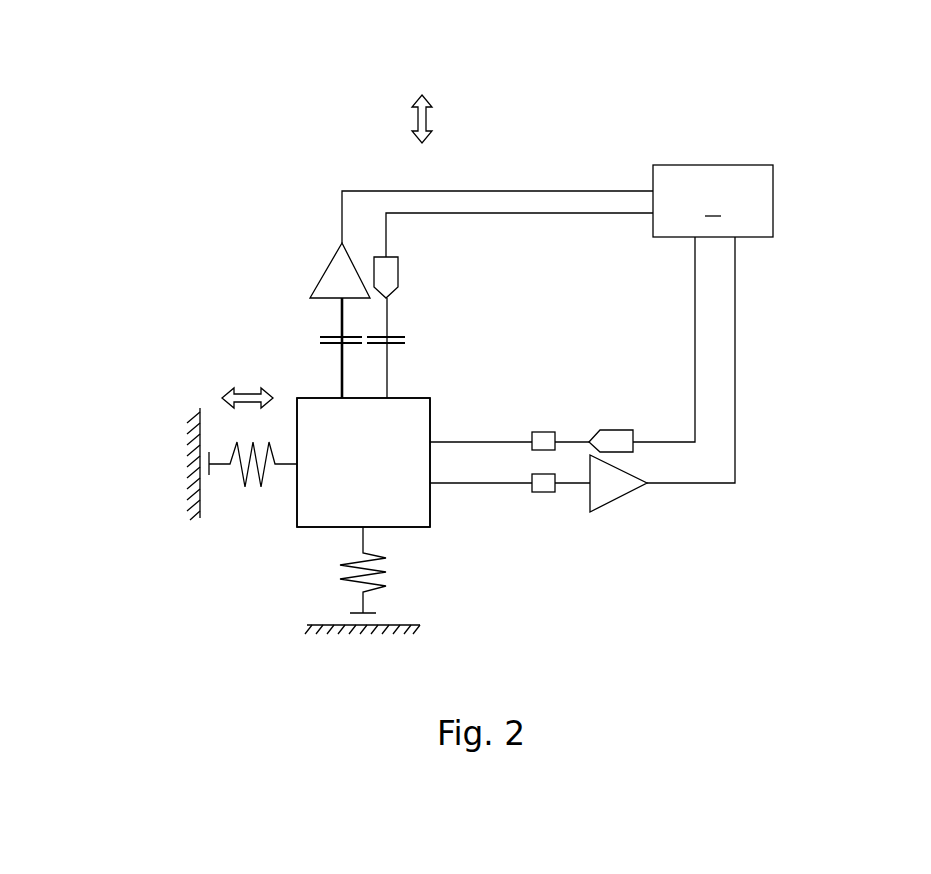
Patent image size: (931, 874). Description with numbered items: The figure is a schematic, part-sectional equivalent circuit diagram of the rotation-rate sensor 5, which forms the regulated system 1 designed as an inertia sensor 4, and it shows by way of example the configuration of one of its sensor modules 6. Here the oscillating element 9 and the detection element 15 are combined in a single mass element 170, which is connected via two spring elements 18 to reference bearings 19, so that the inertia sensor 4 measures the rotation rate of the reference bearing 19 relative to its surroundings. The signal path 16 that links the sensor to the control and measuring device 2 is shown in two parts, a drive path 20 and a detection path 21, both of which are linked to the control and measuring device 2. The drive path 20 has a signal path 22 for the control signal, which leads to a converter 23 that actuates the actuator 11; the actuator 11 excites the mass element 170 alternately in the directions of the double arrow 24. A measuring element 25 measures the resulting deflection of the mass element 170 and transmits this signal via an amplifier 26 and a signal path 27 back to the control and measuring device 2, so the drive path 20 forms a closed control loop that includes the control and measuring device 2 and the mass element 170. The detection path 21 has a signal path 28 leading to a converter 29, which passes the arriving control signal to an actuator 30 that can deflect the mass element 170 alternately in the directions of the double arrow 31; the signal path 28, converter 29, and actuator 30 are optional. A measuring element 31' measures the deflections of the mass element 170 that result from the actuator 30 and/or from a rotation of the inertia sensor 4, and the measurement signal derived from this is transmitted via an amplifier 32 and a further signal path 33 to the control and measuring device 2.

The signal path 16 is at (143, 72).
The detection path 21 is at (345, 135).
The double arrow 31 is at (444, 119).
The signal path 33 is at (497, 190).
The signal path 28 is at (522, 213).
The control and measuring device 2 is at (713, 201).
The amplifier 32 is at (338, 281).
The converter 29 is at (390, 279).
The measuring element 31' is at (318, 348).
The actuator 30 is at (398, 338).
The oscillating element 9 is at (403, 425).
The mass element 170 is at (363, 462).
The detection element 15 is at (363, 462).
The double arrow 24 is at (247, 398).
The reference bearing 19 is at (196, 460).
The spring element 18 is at (261, 484).
The actuator 11 is at (541, 432).
The converter 23 is at (614, 430).
The signal path 22 is at (693, 344).
The measuring element 25 is at (541, 492).
The amplifier 26 is at (608, 496).
The signal path 27 is at (737, 360).
The drive path 20 is at (647, 575).
The system 1 is at (240, 553).
The rotation-rate sensor 5 is at (240, 553).
The inertia sensor 4 is at (240, 553).
The sensor module 6 is at (248, 628).